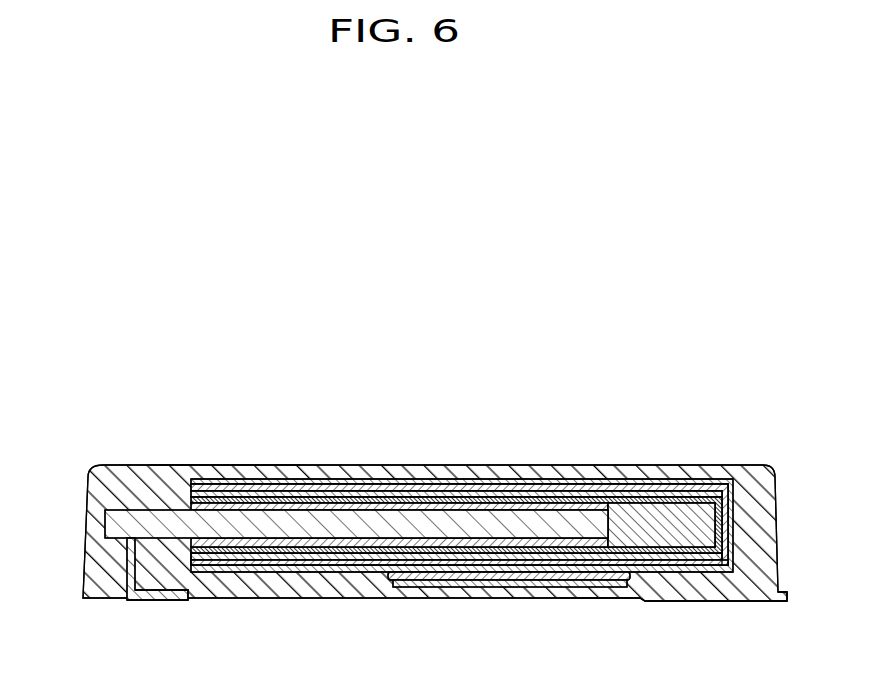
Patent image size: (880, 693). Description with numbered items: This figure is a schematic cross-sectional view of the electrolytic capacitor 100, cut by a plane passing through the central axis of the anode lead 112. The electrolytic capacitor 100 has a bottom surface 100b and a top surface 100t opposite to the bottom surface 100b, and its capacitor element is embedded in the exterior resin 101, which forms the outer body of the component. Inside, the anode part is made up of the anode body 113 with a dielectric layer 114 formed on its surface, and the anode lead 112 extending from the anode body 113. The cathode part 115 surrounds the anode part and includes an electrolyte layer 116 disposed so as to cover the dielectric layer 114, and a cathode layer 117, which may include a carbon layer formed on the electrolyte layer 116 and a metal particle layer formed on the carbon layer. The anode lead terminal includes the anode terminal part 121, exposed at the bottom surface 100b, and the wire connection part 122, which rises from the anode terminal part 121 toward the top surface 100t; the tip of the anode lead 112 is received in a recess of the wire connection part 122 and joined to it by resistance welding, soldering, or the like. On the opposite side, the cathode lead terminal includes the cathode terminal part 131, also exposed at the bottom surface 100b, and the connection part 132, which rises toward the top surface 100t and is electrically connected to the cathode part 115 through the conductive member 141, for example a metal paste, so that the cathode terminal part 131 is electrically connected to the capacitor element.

The electrolytic capacitor 100 is at (98, 368).
The top surface 100t is at (215, 463).
The bottom surface 100b is at (627, 600).
The exterior resin 101 is at (148, 465).
The anode lead 112 is at (381, 522).
The anode body 113 is at (432, 497).
The dielectric layer 114 is at (488, 489).
The cathode part 115 is at (320, 638).
The electrolyte layer 116 is at (248, 556).
The cathode layer 117 is at (300, 566).
The anode terminal part 121 is at (152, 601).
The wire connection part 122 is at (128, 558).
The cathode terminal part 131 is at (710, 601).
The connection part 132 is at (525, 588).
The conductive member 141 is at (458, 581).